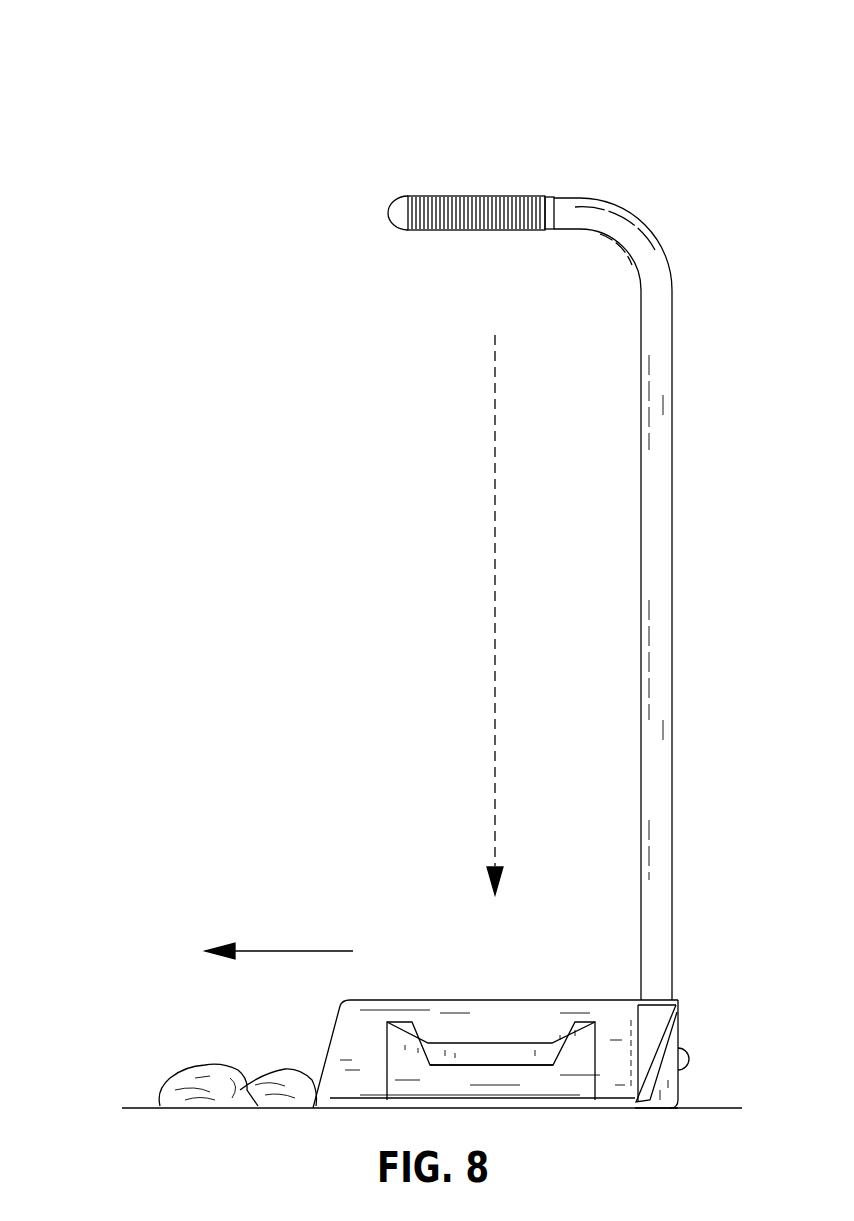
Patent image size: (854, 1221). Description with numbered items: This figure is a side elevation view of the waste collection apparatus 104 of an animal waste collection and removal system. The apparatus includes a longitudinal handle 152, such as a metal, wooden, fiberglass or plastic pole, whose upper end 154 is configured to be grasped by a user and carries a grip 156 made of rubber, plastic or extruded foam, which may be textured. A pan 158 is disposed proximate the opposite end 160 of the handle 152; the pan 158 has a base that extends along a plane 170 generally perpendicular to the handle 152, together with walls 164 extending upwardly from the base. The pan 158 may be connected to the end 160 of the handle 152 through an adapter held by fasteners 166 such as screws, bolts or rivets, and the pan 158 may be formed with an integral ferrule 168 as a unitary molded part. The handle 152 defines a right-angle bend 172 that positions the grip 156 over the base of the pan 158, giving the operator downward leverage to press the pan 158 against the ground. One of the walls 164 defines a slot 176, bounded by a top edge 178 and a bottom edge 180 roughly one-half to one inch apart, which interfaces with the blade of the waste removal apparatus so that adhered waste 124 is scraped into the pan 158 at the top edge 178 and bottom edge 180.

The waste collection apparatus 104 is at (438, 603).
The waste 124 is at (200, 1075).
The handle 152 is at (673, 400).
The end of the handle 154 is at (670, 285).
The grip 156 is at (475, 195).
The pan 158 is at (680, 1092).
The end of the handle 160 is at (672, 960).
The walls 164 is at (528, 1022).
The fasteners 166 is at (682, 1045).
The ferrule 168 is at (658, 1092).
The plane 170 is at (138, 1110).
The right-angle bend 172 is at (627, 245).
The slot 176 is at (540, 1053).
The top edge 178 is at (467, 1043).
The bottom edge 180 is at (490, 1067).